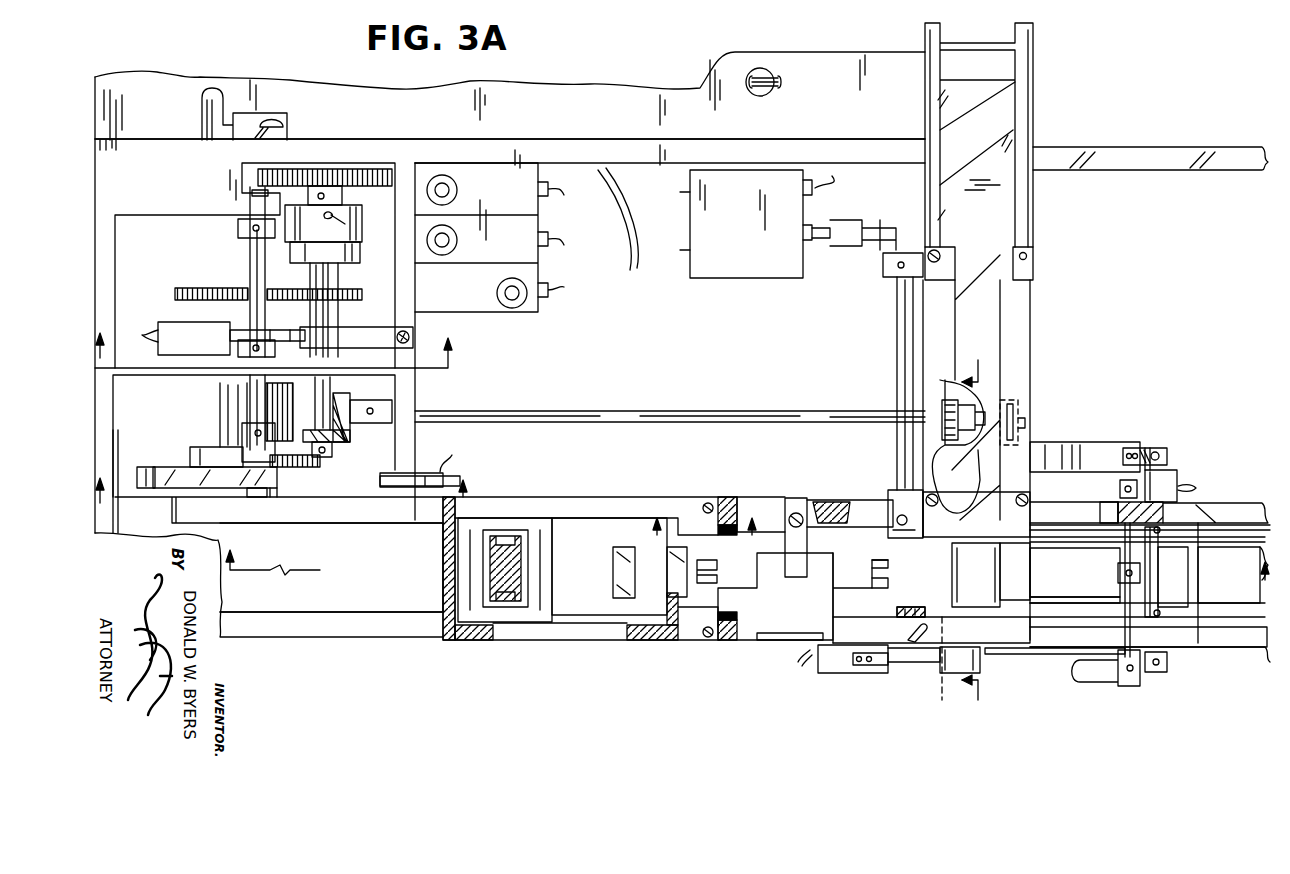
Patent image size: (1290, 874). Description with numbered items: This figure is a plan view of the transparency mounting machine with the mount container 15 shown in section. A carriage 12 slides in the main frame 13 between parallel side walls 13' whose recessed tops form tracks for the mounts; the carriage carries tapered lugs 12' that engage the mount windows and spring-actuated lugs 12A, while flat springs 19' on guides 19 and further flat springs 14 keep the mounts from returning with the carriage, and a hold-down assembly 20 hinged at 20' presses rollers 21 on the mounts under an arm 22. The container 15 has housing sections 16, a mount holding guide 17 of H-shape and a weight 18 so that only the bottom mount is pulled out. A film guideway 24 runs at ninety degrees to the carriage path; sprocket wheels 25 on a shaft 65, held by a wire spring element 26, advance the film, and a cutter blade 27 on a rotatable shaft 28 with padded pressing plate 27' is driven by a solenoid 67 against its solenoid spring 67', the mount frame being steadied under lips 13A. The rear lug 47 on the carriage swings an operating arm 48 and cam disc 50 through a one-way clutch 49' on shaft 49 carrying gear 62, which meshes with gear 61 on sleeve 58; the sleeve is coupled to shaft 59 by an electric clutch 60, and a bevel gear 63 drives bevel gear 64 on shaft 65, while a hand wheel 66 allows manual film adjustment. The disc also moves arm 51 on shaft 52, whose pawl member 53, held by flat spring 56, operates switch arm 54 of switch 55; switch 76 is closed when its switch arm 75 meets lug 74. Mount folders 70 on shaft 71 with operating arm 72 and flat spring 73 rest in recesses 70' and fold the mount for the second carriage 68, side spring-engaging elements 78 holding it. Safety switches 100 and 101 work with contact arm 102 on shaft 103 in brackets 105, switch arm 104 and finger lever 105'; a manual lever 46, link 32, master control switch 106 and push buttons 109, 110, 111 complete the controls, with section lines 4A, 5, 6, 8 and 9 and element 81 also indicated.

The manual lever 46 is at (218, 95).
The master control switch 106 is at (768, 75).
The main frame 13 is at (510, 220).
The shaft 59 is at (330, 168).
The hand wheel 66 is at (342, 193).
The electric clutch 60 is at (323, 234).
The shaft 52 is at (252, 253).
The shaft 49 is at (258, 358).
The one-way mechanical clutch 49' is at (213, 415).
The gear 62 is at (183, 288).
The gear 61 is at (350, 289).
The combined switch-operating member and pawl 53 is at (290, 330).
The sleeve 58 is at (338, 316).
The switch arm 54 is at (240, 333).
The switch 55 is at (186, 338).
The flat spring 56 is at (371, 407).
The arm 51 is at (281, 445).
The cam disc 50 is at (216, 456).
The operating arm 48 is at (215, 482).
The lug 47 is at (143, 472).
The bevel gear 64 is at (345, 438).
The bevel gear 63 is at (342, 447).
The switch 100 is at (447, 470).
The section line 6 is at (277, 358).
The section line 5 is at (286, 493).
The section line 4A is at (745, 572).
The section line 8 is at (960, 530).
The section line 9 is at (705, 532).
The switch button 109 is at (495, 190).
The push button switch 110 is at (495, 240).
The push button switch 111 is at (506, 293).
The solenoid 67 is at (788, 224).
The solenoid spring 67' is at (637, 222).
The guideway 24 is at (978, 331).
The rotatable shaft 28 is at (897, 312).
The shaft 65 is at (662, 411).
The sprocket wheels 25 is at (1010, 400).
The wire spring element 26 is at (1018, 425).
The side walls 13' is at (861, 572).
The mount container and dispenser 15 is at (463, 649).
The housing sections 16 is at (435, 620).
The weight 18 is at (506, 570).
The mount holding guide 17 is at (503, 535).
The carriage 12 is at (625, 566).
The tapered lugs 12' is at (650, 572).
The rollers 21 is at (702, 565).
The hold-down assembly 20 is at (755, 596).
The hinge 20' is at (790, 650).
The guides 19 is at (702, 586).
The flat springs 19' is at (741, 575).
The arm 22 is at (800, 500).
The lips 13A is at (860, 600).
The spring-actuated lugs 12A is at (915, 552).
The padded pressing plate 27' is at (976, 575).
The switch 76 is at (843, 659).
The lug 74 is at (960, 660).
The switch arm 75 is at (904, 662).
The flat springs 14 is at (912, 644).
The flat spring 73 is at (1085, 457).
The cutter blade 27 is at (1102, 483).
The switch 101 is at (1170, 480).
The switch arm 104 is at (1120, 491).
The rotatable shaft 103 is at (1115, 540).
The brackets 105 is at (1172, 575).
The side spring-engaging elements 78 is at (1218, 507).
The mount folders 70 is at (1150, 590).
The recesses 70' is at (1075, 607).
The contact arm 102 is at (1118, 570).
The shaft 71 is at (1145, 595).
The second carriage 68 is at (1173, 577).
The link 32 is at (1149, 583).
The bar 81 is at (1245, 650).
The operating arm 72 is at (1052, 655).
The finger lever 105' is at (1091, 676).